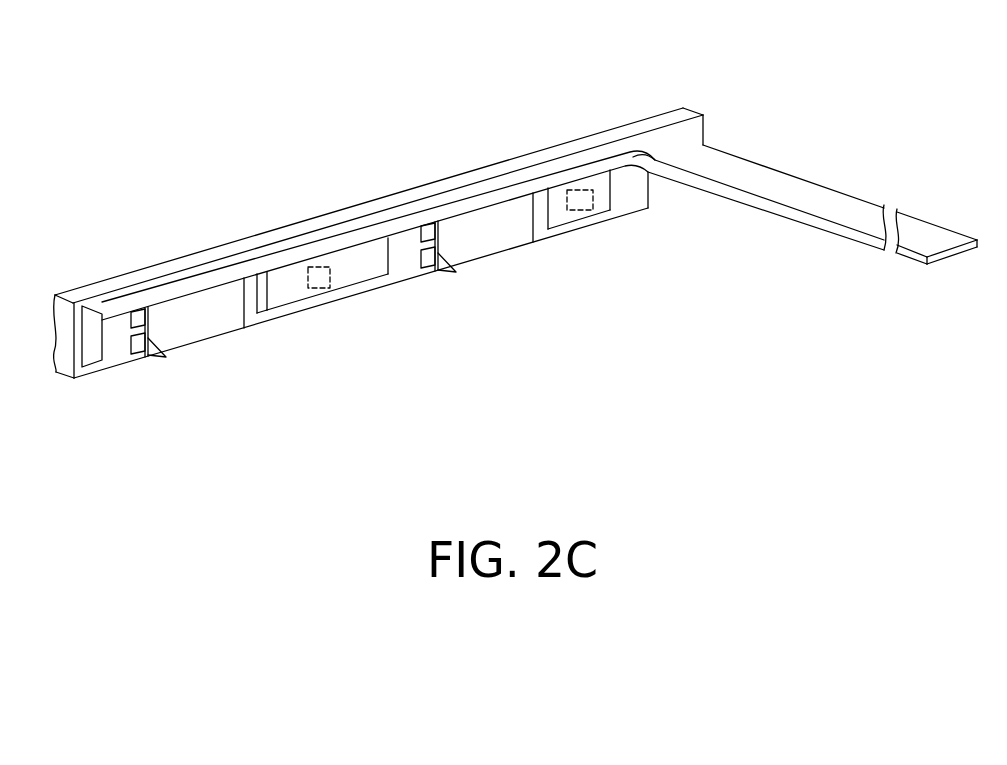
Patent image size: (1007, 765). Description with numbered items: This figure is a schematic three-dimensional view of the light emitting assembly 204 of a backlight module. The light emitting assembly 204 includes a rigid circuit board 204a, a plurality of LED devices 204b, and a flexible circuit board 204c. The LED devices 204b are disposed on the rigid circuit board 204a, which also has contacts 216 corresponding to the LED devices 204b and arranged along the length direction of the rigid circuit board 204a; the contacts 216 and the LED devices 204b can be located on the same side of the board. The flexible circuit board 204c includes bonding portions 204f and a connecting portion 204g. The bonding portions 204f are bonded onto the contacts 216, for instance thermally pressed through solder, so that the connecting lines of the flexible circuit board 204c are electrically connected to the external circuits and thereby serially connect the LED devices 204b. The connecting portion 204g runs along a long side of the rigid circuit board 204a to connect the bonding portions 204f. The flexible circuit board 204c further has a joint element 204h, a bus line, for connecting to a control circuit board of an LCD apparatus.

The light emitting assembly 204 is at (745, 416).
The rigid circuit board 204a is at (645, 178).
The LED devices 204b is at (217, 328).
The flexible circuit board 204c is at (588, 33).
The bonding portions 204f is at (322, 253).
The connecting portion 204g is at (638, 150).
The joint element 204h is at (938, 237).
The contacts 216 is at (322, 312).